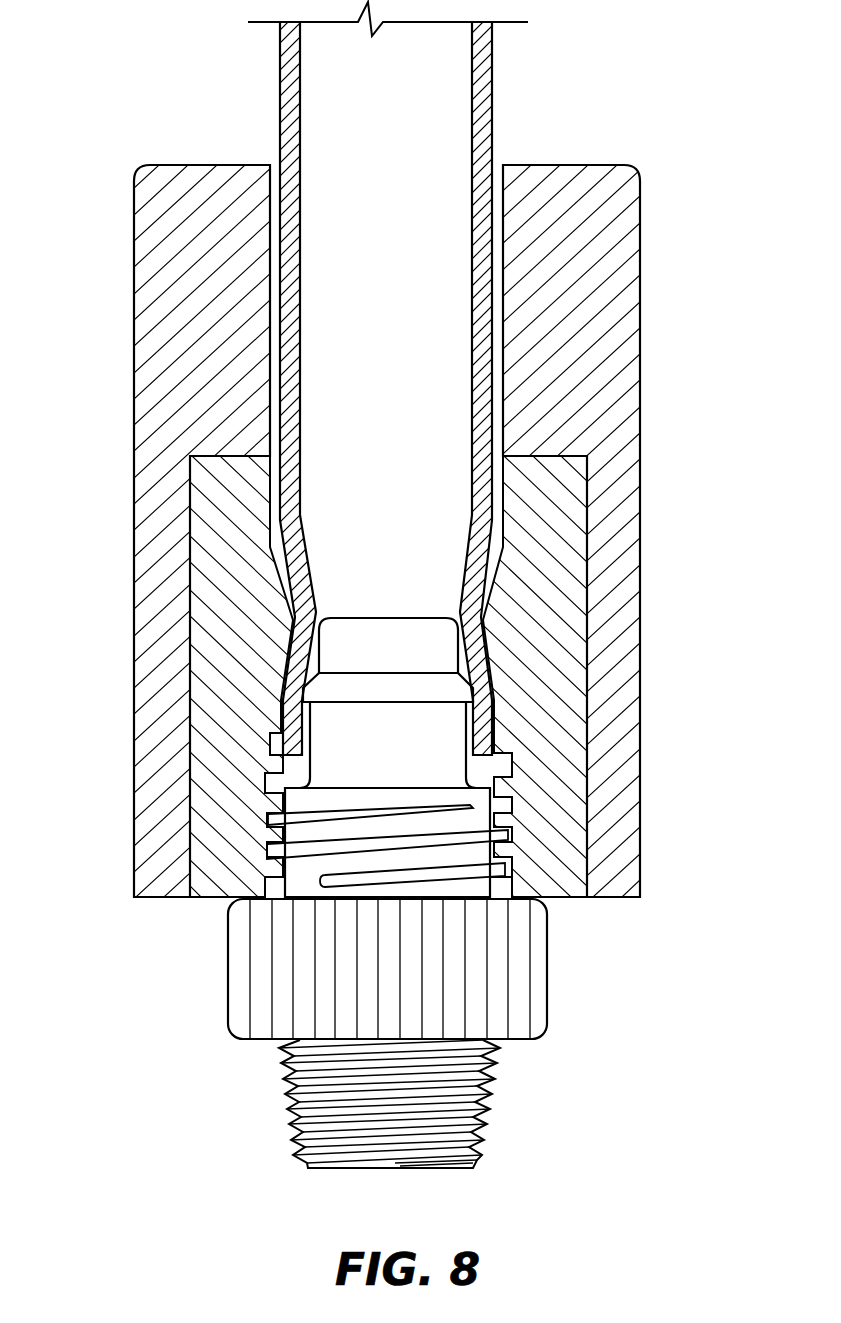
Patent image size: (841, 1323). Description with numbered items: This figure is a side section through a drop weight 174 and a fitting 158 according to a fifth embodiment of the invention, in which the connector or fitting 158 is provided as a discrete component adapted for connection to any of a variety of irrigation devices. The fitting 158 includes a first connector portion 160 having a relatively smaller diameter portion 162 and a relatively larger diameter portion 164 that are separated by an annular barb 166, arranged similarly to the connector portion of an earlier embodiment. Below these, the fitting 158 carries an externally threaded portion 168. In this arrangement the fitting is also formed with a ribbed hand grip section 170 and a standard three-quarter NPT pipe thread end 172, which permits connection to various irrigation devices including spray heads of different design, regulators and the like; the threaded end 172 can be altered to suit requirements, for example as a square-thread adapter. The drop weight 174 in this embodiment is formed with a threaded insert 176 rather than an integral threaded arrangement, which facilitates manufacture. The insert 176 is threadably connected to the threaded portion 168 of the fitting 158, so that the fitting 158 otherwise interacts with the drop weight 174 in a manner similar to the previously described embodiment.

The fitting 158 is at (176, 977).
The first connector portion 160 is at (338, 604).
The smaller diameter portion 162 is at (383, 637).
The larger diameter portion 164 is at (513, 785).
The annular barb 166 is at (358, 688).
The externally threaded portion 168 is at (473, 818).
The ribbed hand grip section 170 is at (540, 972).
The pipe thread end 172 is at (493, 1110).
The drop weight 174 is at (642, 340).
The threaded insert 176 is at (577, 513).